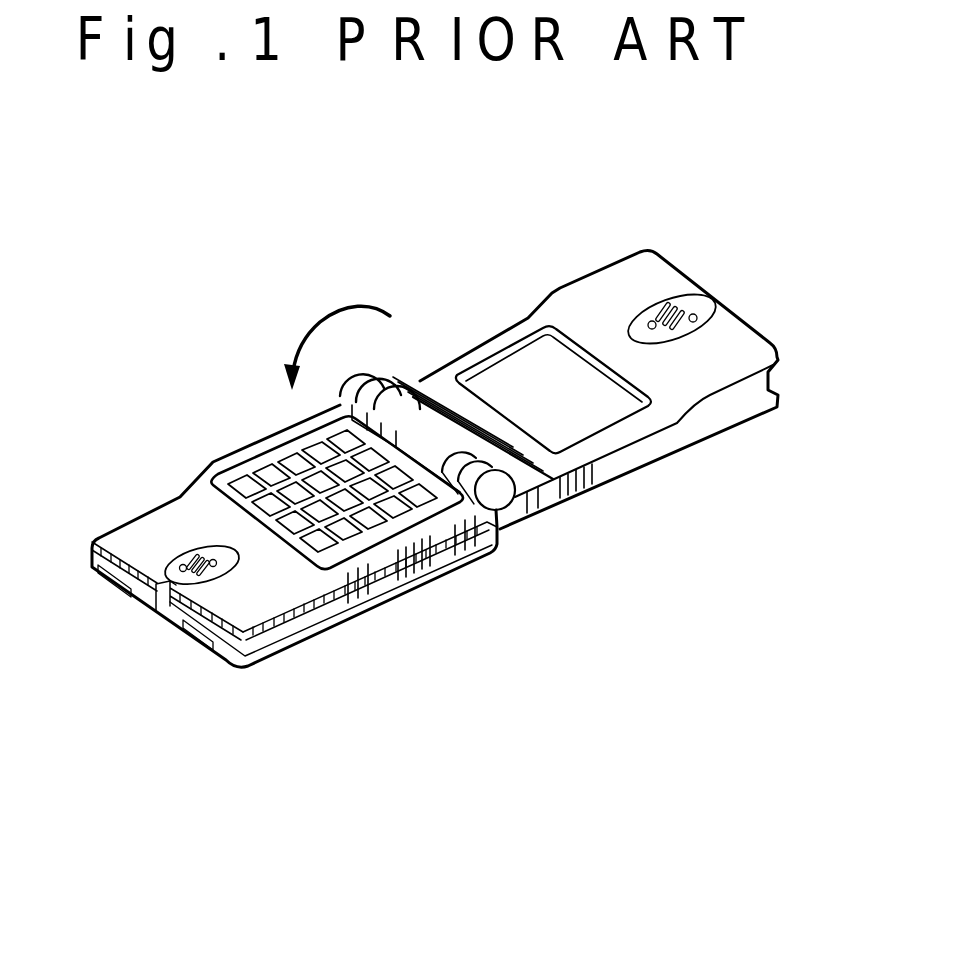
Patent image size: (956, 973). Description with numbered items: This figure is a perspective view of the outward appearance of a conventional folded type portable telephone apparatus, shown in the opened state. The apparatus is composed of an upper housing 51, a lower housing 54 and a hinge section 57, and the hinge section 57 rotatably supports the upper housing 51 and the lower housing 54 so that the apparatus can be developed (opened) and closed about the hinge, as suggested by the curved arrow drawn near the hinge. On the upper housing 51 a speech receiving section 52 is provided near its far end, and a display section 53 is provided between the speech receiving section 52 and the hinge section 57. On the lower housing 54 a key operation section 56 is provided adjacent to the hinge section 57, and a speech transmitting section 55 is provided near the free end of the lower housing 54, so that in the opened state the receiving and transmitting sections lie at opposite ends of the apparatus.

The upper housing 51 is at (650, 280).
The speech receiving section 52 is at (690, 336).
The display section 53 is at (572, 425).
The lower housing 54 is at (153, 527).
The speech transmitting section 55 is at (207, 580).
The key operation section 56 is at (320, 560).
The hinge section 57 is at (388, 400).